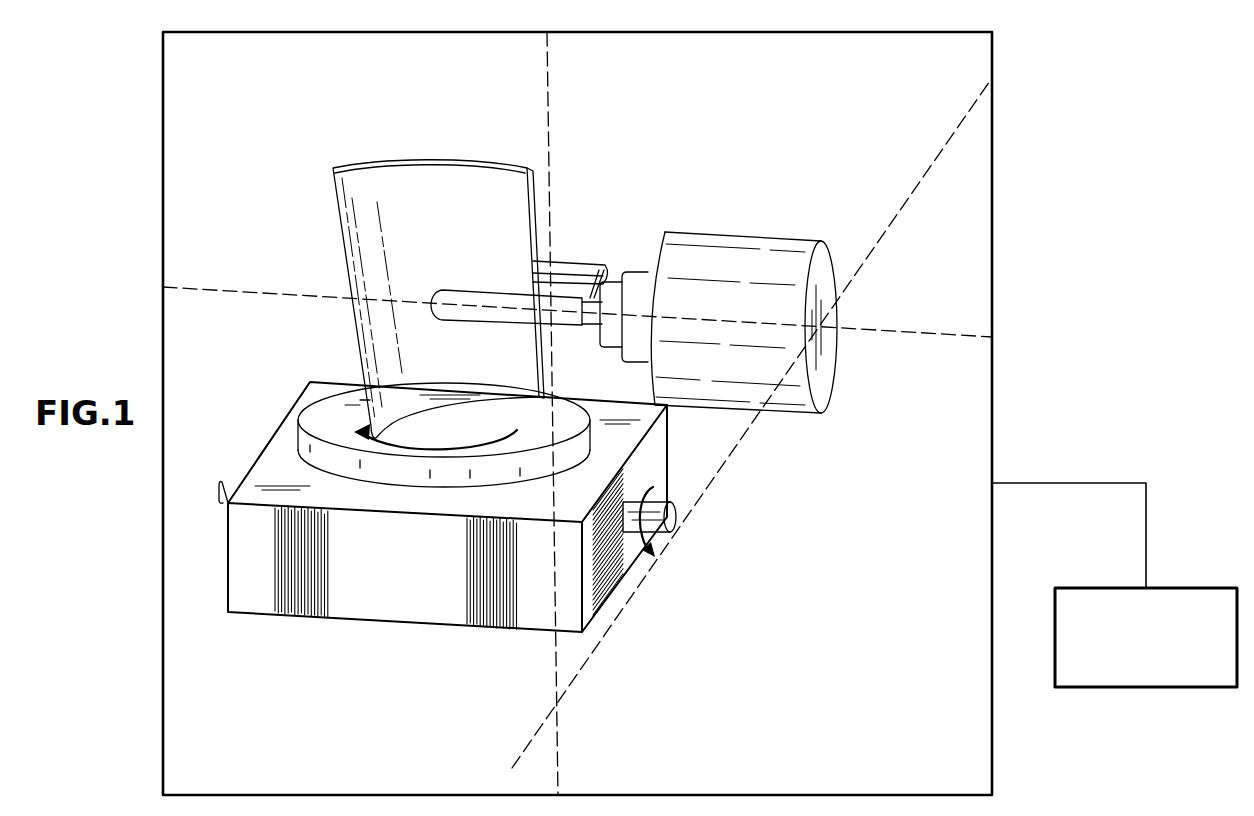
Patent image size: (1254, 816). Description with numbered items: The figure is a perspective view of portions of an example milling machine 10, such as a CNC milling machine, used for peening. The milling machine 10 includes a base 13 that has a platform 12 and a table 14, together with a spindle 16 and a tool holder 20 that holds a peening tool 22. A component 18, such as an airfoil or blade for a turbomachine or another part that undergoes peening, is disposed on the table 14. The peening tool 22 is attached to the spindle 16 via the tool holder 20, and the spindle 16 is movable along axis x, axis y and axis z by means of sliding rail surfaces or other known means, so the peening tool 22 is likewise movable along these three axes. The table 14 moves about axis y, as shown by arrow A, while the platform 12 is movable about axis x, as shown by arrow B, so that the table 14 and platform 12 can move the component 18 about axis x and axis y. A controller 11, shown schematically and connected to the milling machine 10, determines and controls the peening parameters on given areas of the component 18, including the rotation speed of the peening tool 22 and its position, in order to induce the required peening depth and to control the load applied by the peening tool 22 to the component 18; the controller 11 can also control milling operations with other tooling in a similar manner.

The milling machine 10 is at (992, 212).
The controller 11 is at (1161, 650).
The platform 12 is at (243, 565).
The base 13 is at (371, 662).
The table 14 is at (413, 467).
The spindle 16 is at (733, 255).
The component 18 is at (395, 198).
The tool holder 20 is at (620, 264).
The peening tool 22 is at (509, 288).
The arrow A is at (438, 456).
The arrow B is at (647, 486).
The axis X x is at (247, 291).
The axis Y y is at (553, 118).
The axis Z z is at (898, 211).